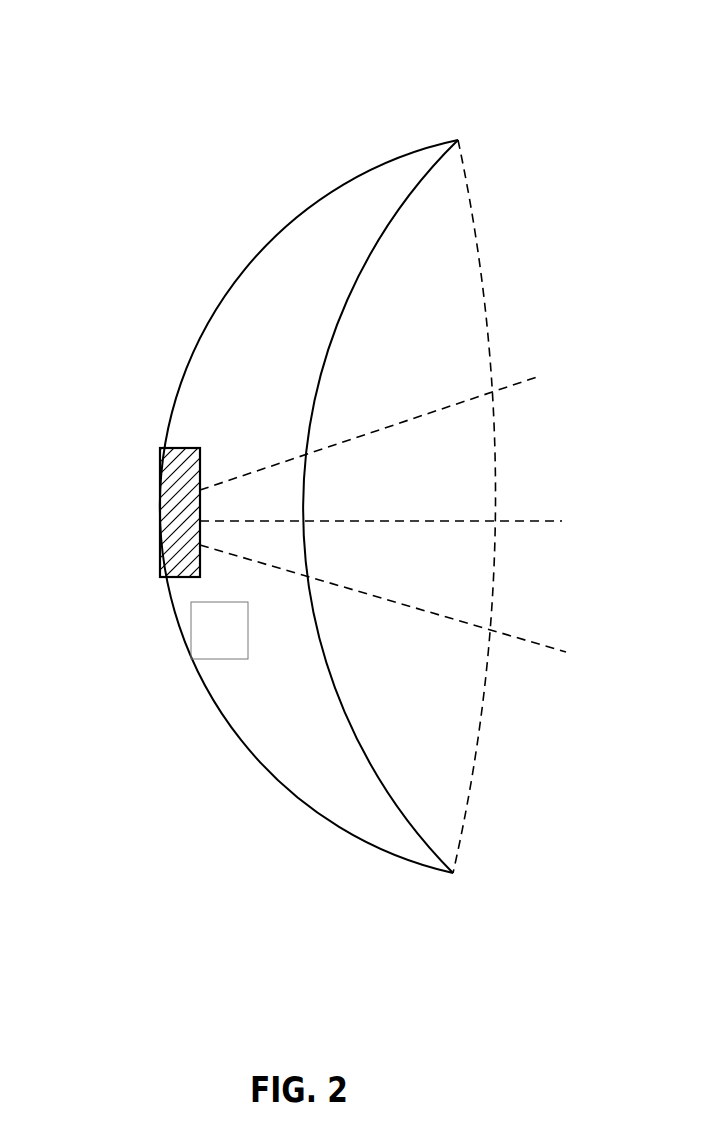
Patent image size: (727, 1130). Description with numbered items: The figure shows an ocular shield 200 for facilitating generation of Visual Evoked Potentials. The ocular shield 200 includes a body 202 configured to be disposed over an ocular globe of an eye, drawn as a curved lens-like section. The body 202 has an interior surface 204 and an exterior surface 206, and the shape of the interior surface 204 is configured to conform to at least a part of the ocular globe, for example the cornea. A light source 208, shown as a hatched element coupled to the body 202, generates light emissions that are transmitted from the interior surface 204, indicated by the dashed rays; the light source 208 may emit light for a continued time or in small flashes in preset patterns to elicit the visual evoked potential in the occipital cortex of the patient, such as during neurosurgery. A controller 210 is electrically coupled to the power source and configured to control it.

The ocular shield 200 is at (338, 82).
The body 202 is at (218, 290).
The interior surface 204 is at (462, 246).
The exterior surface 206 is at (343, 800).
The light source 208 is at (180, 518).
The controller 210 is at (200, 647).